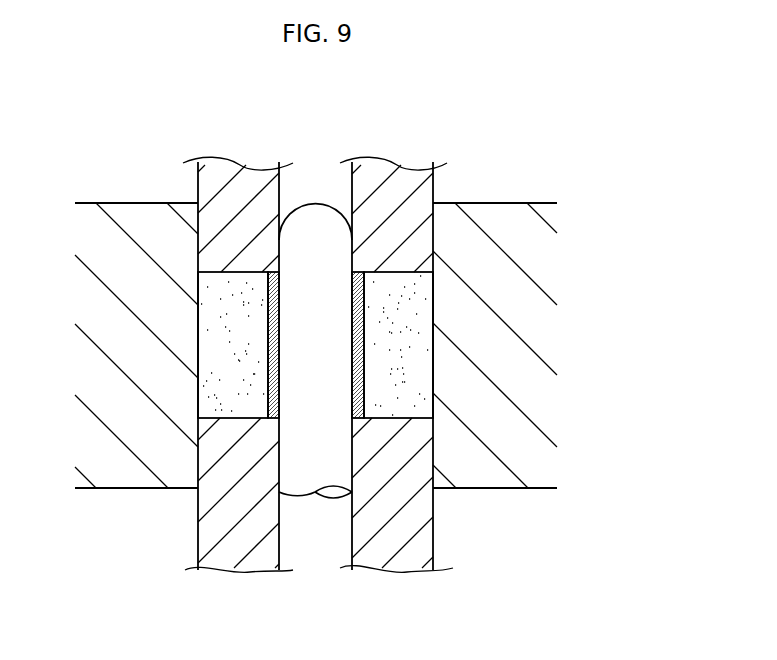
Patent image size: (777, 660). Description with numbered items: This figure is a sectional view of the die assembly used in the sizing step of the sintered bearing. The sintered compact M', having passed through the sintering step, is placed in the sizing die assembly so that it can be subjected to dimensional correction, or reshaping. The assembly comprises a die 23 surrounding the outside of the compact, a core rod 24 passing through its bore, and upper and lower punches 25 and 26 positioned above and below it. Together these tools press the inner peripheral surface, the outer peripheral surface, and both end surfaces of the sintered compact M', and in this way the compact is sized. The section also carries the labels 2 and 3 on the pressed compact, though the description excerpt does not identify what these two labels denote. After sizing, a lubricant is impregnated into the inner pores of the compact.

The thin layer / electrode film of the seal 2 is at (263, 357).
The sealing member (stippled block) 3 is at (217, 312).
The die 23 is at (135, 215).
The core rod 24 is at (315, 205).
The upper punch 25 is at (407, 183).
The lower punch 26 is at (377, 550).
The sintered compact M' is at (433, 286).